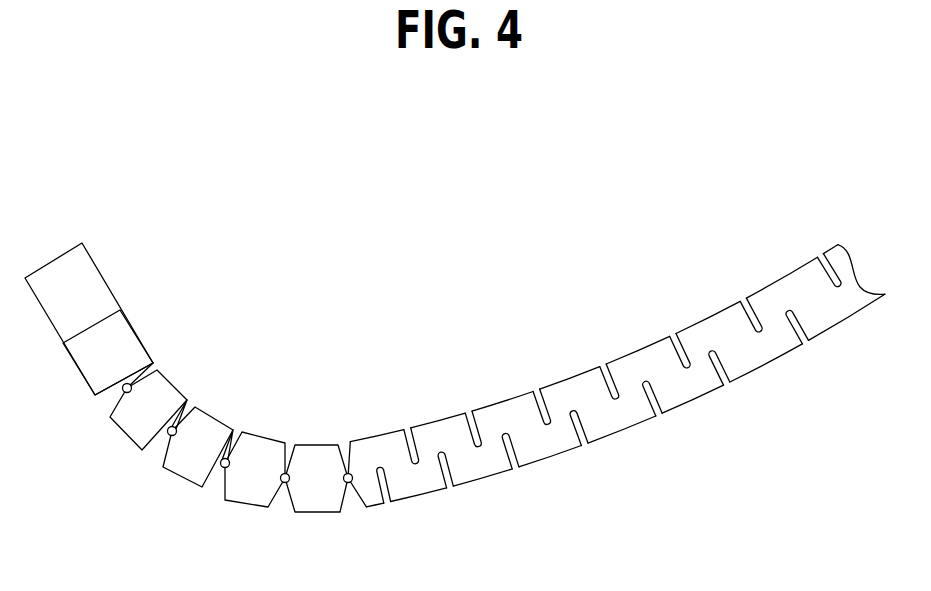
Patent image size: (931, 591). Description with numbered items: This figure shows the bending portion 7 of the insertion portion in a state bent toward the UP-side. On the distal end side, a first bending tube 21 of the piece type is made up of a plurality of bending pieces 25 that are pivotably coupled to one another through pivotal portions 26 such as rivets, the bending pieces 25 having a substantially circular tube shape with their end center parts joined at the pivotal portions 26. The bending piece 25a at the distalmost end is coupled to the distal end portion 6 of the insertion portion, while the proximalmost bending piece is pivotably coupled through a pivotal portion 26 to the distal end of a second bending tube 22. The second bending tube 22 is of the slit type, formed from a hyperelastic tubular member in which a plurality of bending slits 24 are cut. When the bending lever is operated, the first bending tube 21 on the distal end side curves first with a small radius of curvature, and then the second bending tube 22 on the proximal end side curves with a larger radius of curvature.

The distal end portion 6 is at (70, 292).
The bending portion 7 is at (402, 280).
The first bending tube 21 is at (170, 512).
The second bending tube 22 is at (503, 417).
The bending slit 24 is at (607, 397).
The bending piece 25 is at (312, 470).
The bending piece at a distalmost end 25a is at (108, 350).
The pivotal portion 26 is at (174, 430).